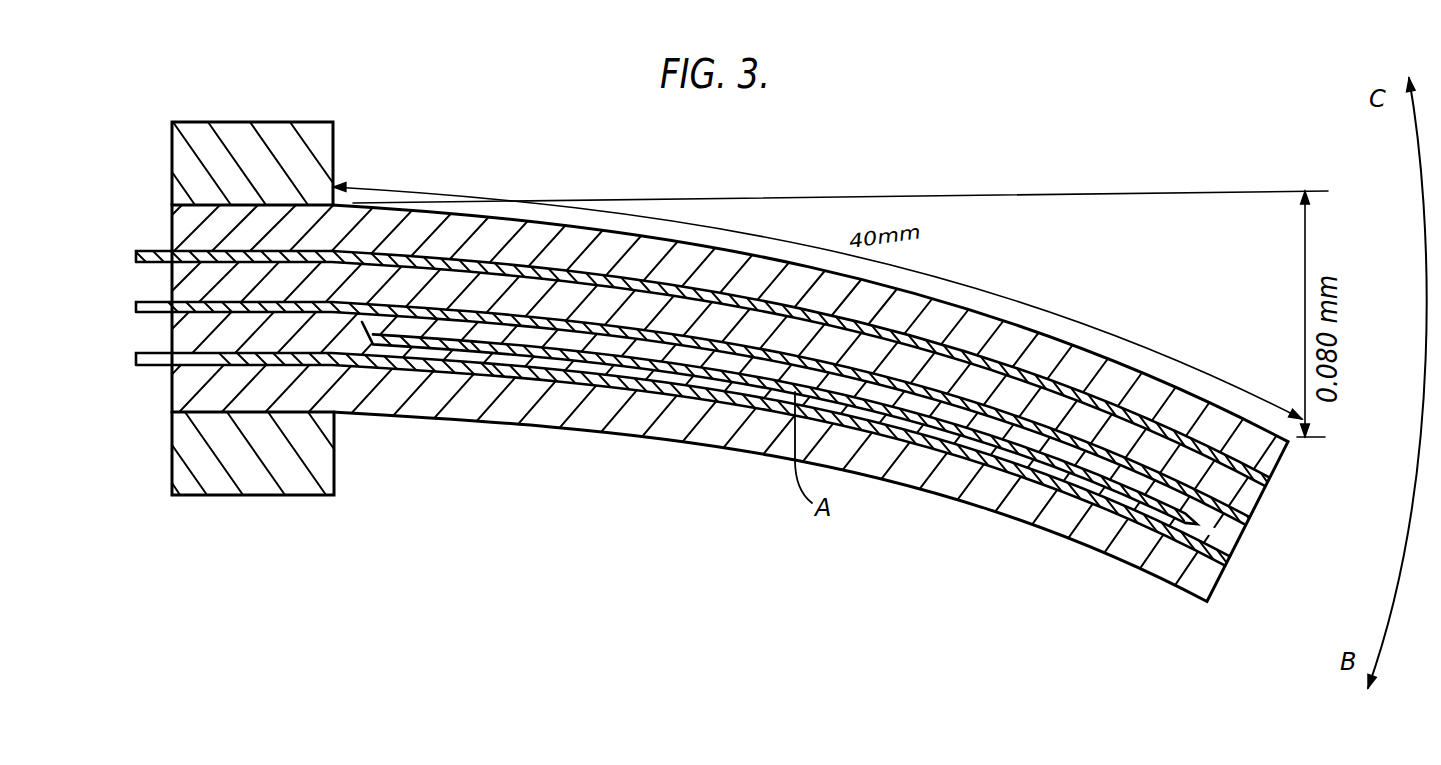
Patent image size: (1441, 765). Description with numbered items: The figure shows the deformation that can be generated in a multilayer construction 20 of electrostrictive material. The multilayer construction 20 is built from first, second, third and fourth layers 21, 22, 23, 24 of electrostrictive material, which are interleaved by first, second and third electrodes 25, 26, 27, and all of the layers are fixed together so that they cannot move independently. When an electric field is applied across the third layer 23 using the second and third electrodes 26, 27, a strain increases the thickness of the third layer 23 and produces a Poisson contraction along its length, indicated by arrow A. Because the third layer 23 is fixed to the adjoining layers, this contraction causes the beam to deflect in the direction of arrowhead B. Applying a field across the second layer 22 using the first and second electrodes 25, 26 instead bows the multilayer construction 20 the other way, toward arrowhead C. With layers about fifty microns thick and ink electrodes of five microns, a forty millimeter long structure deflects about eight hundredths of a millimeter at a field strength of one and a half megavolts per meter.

The multilayer construction 20 is at (363, 440).
The first layer 21 is at (1272, 456).
The second layer 22 is at (1253, 495).
The third layer 23 is at (1228, 540).
The fourth layer 24 is at (1212, 583).
The first electrode 25 is at (749, 478).
The second electrode 26 is at (749, 478).
The third electrode 27 is at (749, 478).